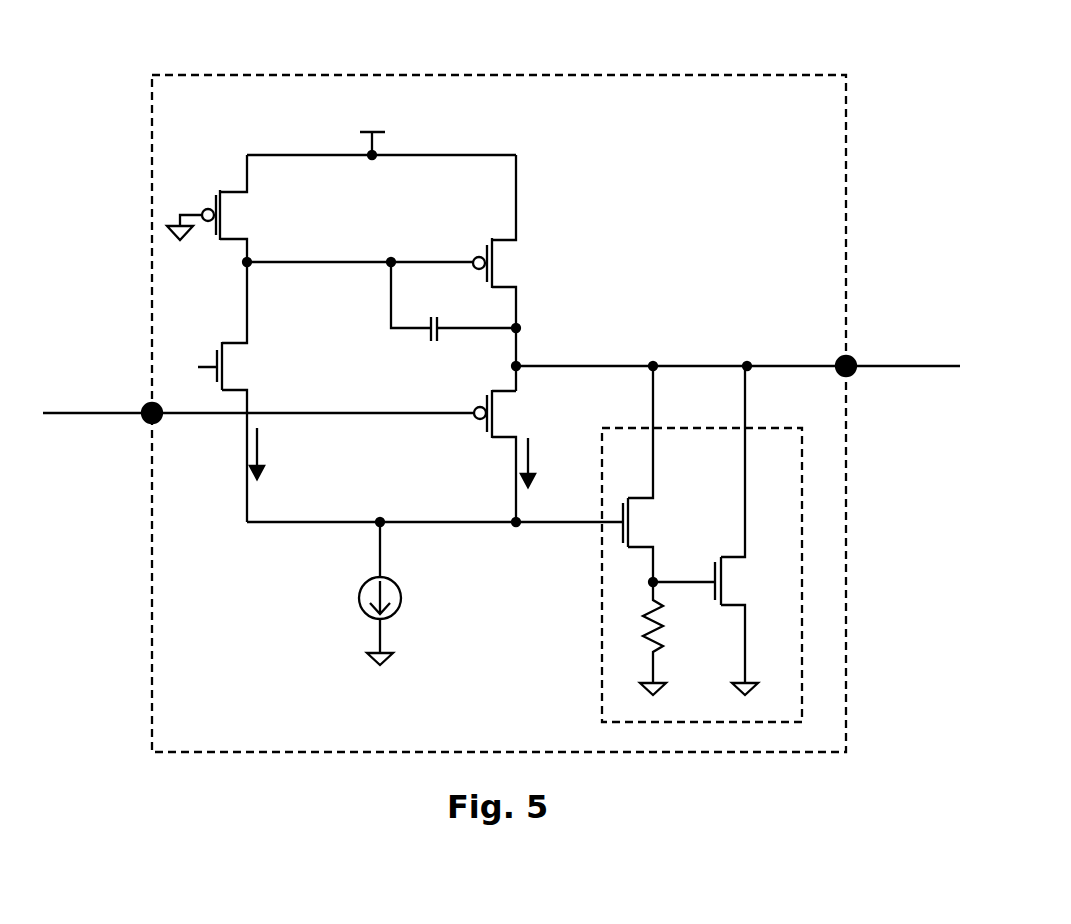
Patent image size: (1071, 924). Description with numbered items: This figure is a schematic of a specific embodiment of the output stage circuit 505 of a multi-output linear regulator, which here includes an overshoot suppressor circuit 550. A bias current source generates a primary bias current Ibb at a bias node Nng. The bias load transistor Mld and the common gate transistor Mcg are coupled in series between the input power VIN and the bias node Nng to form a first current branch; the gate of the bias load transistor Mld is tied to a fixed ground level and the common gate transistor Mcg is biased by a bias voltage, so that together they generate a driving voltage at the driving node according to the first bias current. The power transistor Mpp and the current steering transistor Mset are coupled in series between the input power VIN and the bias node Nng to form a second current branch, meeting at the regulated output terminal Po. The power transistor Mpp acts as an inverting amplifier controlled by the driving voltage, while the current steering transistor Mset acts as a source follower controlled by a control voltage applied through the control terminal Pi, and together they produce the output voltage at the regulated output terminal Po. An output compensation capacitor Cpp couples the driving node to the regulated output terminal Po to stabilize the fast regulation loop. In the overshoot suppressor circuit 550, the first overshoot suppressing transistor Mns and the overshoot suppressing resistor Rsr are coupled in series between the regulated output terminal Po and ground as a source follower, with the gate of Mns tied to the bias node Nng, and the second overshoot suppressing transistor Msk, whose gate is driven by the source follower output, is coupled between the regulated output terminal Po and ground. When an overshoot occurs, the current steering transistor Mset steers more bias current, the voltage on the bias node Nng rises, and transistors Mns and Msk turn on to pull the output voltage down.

The output stage circuit 505 is at (556, 75).
The overshoot suppressor circuit 550 is at (601, 648).
The input power VIN is at (381, 129).
The bias load transistor Mld is at (222, 208).
The common gate transistor Mcg is at (224, 390).
The power transistor Mpp is at (404, 273).
The output compensation capacitor Cpp is at (455, 318).
The regulated output terminal Po is at (850, 352).
The current steering transistor Mset is at (531, 456).
The control terminal Pi is at (148, 406).
The bias node Nng is at (384, 526).
The primary bias current Ibb is at (358, 593).
The first overshoot suppressing transistor Mns is at (656, 476).
The second overshoot suppressing transistor Msk is at (717, 530).
The overshoot suppressing resistor Rsr is at (676, 638).